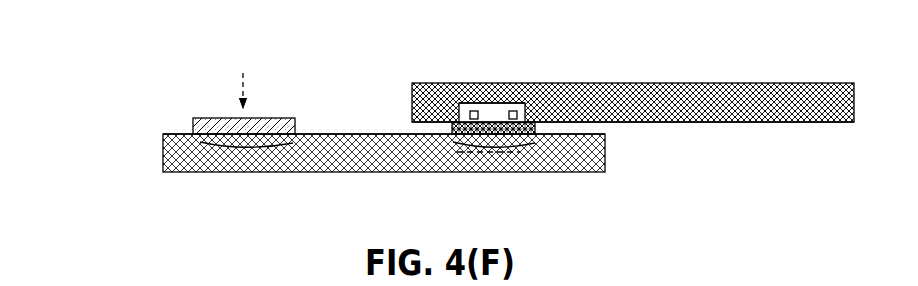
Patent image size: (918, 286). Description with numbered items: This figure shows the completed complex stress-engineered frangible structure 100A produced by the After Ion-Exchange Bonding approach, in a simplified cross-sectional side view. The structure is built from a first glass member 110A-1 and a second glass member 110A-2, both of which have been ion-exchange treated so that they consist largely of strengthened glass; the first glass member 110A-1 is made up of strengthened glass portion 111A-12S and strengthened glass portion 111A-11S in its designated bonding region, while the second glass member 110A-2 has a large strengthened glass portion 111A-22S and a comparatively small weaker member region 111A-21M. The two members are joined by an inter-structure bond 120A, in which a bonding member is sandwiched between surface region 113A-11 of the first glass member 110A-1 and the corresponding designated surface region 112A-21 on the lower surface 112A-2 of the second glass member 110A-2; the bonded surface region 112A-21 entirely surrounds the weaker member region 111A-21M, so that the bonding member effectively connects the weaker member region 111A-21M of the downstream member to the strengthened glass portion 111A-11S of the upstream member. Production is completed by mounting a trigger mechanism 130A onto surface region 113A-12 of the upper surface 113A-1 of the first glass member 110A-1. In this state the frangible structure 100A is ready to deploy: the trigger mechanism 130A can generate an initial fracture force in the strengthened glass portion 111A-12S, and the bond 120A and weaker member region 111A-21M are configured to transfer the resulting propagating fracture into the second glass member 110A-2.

The complex stress-engineered frangible structure 100A is at (141, 62).
The first glass member 110A-1 is at (162, 152).
The second glass member 110A-2 is at (411, 82).
The strengthened glass portion 111A-12S is at (315, 150).
The strengthened glass portion 111A-11S is at (515, 155).
The weaker member region 111A-21M is at (524, 104).
The strengthened glass portion 111A-22S is at (685, 108).
The lower surface 112A-2 is at (798, 123).
The designated surface region 112A-21 is at (493, 118).
The upper surface 113A-1 is at (343, 133).
The surface region 113A-11 is at (512, 143).
The surface region 113A-12 is at (263, 150).
The bond 120A is at (487, 98).
The trigger mechanism 130A is at (232, 128).